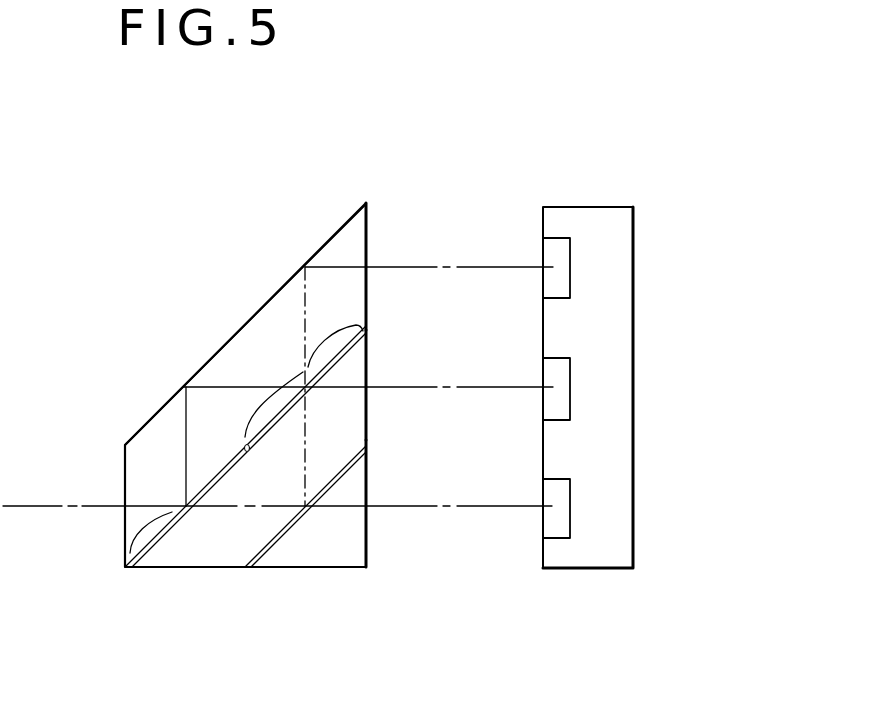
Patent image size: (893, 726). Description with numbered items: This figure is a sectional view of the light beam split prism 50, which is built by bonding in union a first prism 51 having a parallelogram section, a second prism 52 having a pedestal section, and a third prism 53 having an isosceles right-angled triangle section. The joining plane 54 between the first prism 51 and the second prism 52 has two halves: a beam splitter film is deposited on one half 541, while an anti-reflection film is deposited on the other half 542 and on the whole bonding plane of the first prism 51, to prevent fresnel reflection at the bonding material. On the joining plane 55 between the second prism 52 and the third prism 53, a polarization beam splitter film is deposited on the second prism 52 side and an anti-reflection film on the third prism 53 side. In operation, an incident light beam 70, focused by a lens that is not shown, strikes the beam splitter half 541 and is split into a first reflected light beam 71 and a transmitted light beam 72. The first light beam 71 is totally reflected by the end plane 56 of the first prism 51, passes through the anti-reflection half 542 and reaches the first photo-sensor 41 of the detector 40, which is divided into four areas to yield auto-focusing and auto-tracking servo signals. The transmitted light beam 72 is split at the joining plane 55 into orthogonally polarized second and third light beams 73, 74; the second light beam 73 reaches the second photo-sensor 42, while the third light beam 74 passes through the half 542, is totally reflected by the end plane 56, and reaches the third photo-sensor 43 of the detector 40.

The detector 40 is at (610, 384).
The first photo-sensor 41 is at (548, 373).
The second photo-sensor 42 is at (545, 525).
The third photo-sensor 43 is at (552, 253).
The light beam split prism 50 is at (131, 410).
The first prism 51 is at (356, 233).
The second prism 52 is at (362, 360).
The third prism 53 is at (363, 475).
The joining plane 54 is at (200, 443).
The half of the bonding plane with beam splitter film 541 is at (174, 507).
The half of the bonding plane with anti-reflection film 542 is at (244, 349).
The joining plane 55 is at (247, 569).
The end plane 56 is at (292, 280).
The incident light beam 70 is at (38, 509).
The first reflected light beam 71 is at (487, 385).
The transmitted light beam 72 is at (221, 508).
The second light beam 73 is at (485, 503).
The third light beam 74 is at (490, 263).